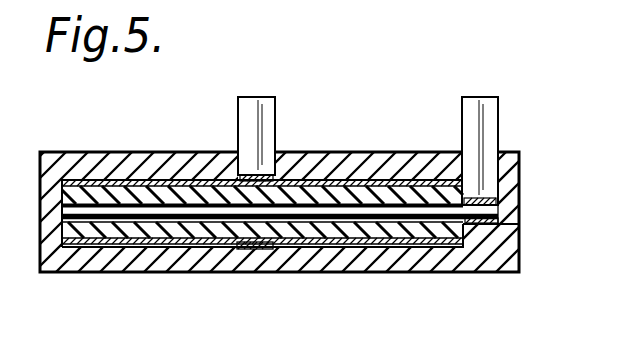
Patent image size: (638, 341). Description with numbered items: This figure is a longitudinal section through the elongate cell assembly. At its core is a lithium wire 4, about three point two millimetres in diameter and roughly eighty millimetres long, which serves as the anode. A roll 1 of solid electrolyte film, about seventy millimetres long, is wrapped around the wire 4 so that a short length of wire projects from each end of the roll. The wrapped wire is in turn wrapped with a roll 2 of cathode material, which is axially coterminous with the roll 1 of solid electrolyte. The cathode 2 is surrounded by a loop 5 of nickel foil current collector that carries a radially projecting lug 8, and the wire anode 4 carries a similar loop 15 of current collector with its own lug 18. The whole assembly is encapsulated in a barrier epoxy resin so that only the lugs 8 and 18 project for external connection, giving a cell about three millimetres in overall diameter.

The roll of solid electrolyte film 1 is at (131, 203).
The roll of cathode 2 is at (185, 184).
The lithium wire 4 is at (125, 212).
The loop of nickel foil current collector 5 is at (257, 247).
The lug 8 is at (249, 107).
The loop 15 is at (481, 228).
The lug 18 is at (487, 118).